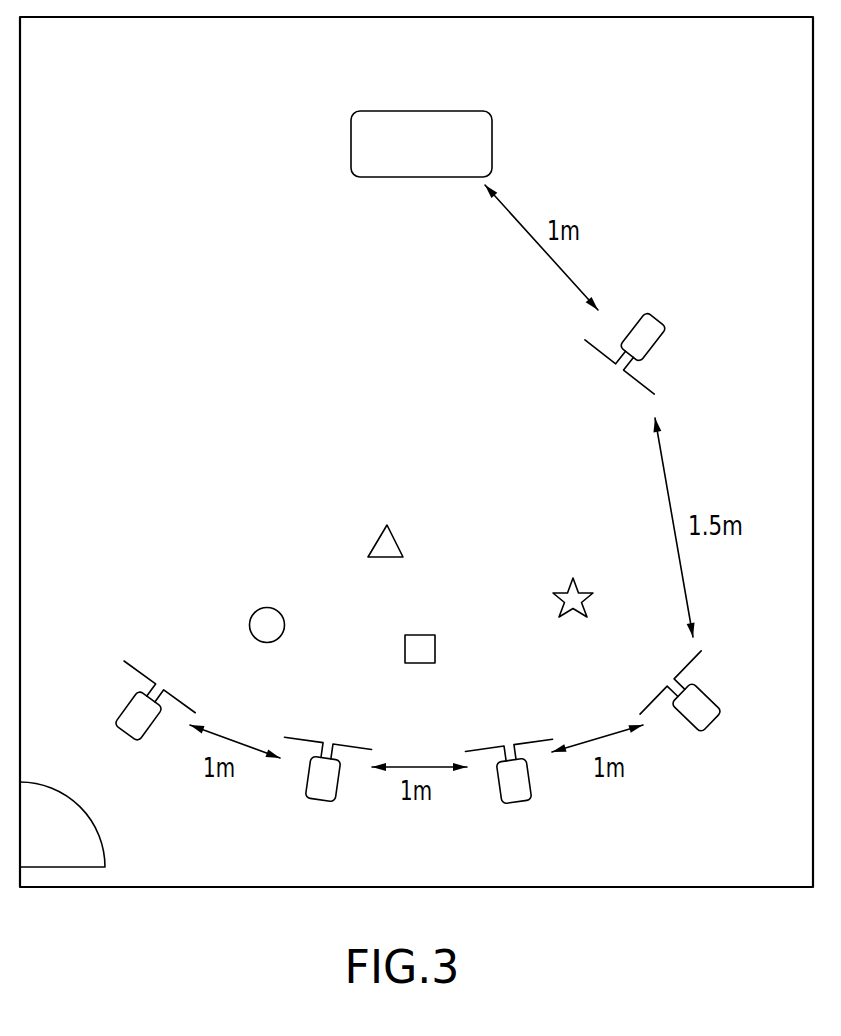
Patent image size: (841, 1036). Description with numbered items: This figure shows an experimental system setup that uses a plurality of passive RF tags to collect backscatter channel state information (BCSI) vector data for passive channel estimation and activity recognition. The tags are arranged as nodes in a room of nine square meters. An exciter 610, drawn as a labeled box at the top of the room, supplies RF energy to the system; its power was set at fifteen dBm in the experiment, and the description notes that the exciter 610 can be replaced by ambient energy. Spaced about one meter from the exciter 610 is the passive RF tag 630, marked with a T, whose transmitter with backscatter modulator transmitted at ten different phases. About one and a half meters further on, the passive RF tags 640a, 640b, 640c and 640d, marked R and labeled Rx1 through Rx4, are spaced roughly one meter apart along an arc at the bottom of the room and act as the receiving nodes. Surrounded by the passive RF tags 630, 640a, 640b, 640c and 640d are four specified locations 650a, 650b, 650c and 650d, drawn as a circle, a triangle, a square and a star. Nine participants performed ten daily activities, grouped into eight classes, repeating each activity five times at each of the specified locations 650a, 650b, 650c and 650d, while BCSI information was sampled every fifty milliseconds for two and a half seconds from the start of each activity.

The exciter 610 is at (492, 146).
The passive RF tag 630 is at (657, 313).
The passive RF tag 640a is at (718, 707).
The passive RF tag 640b is at (533, 795).
The passive RF tag 640c is at (339, 797).
The passive RF tag 640d is at (141, 740).
The specified location 650a is at (253, 610).
The specified location 650b is at (376, 540).
The specified location 650c is at (405, 650).
The specified location 650d is at (572, 613).